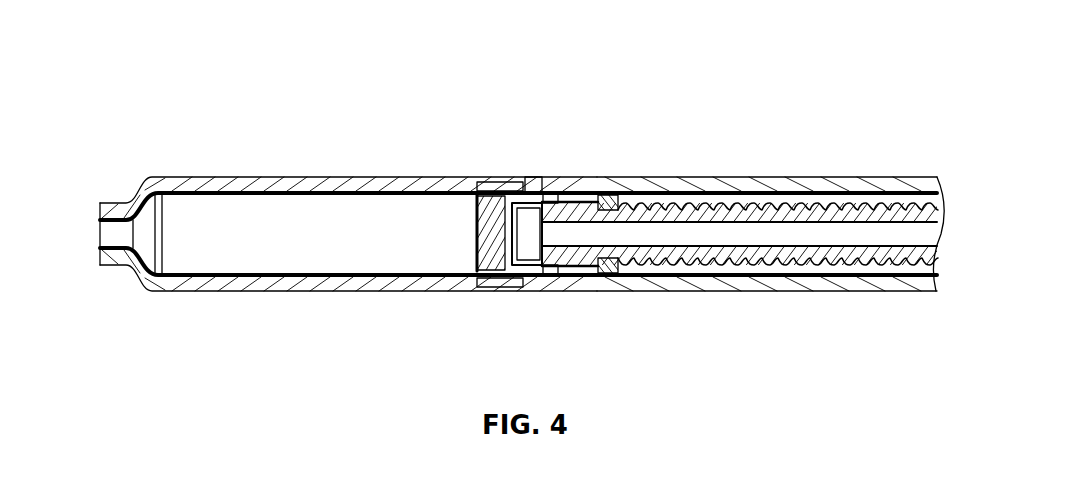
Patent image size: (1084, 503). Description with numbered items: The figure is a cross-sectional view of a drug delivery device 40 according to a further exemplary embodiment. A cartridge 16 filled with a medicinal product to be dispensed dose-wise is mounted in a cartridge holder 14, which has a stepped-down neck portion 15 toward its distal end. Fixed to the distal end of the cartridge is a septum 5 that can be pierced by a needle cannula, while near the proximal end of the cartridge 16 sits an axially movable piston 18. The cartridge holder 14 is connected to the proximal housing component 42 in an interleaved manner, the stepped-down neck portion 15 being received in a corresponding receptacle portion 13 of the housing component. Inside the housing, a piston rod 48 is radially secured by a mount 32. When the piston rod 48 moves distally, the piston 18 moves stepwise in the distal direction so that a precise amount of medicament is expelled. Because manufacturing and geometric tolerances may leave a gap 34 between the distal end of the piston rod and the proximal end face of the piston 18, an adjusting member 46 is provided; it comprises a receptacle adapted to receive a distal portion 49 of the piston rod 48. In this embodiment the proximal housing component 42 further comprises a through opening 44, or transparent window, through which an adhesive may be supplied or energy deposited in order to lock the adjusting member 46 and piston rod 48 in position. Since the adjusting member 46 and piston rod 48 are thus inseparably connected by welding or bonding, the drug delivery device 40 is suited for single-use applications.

The septum 5 is at (112, 236).
The receptacle portion 13 is at (488, 293).
The cartridge holder 14 is at (172, 185).
The stepped-down neck portion 15 is at (495, 185).
The cartridge 16 is at (295, 212).
The piston 18 is at (485, 200).
The mount 32 is at (608, 196).
The gap 34 is at (528, 265).
The drug delivery device 40 is at (695, 70).
The proximal housing component 42 is at (803, 183).
The through opening 44 is at (540, 178).
The adjusting member 46 is at (546, 266).
The piston rod 48 is at (668, 263).
The distal portion 49 is at (553, 194).